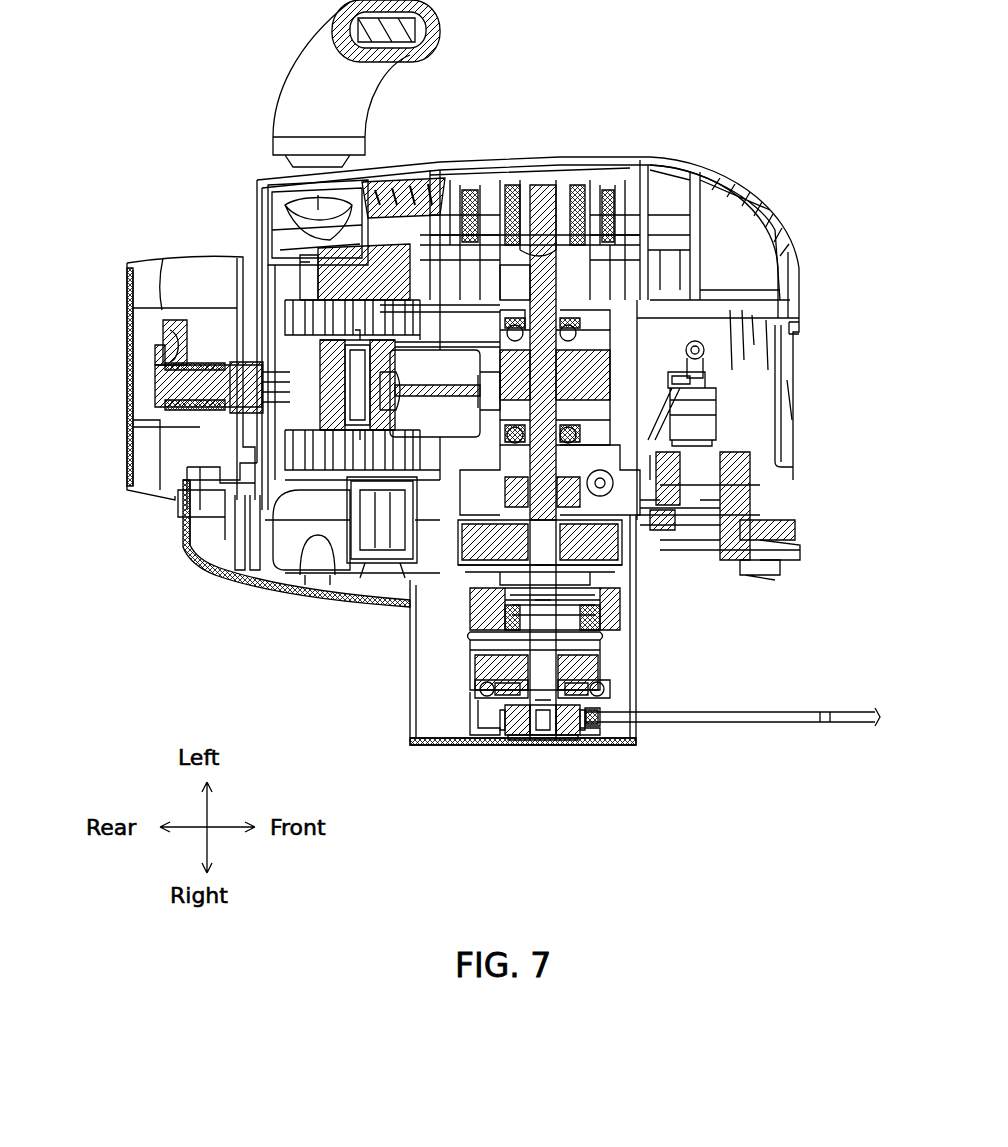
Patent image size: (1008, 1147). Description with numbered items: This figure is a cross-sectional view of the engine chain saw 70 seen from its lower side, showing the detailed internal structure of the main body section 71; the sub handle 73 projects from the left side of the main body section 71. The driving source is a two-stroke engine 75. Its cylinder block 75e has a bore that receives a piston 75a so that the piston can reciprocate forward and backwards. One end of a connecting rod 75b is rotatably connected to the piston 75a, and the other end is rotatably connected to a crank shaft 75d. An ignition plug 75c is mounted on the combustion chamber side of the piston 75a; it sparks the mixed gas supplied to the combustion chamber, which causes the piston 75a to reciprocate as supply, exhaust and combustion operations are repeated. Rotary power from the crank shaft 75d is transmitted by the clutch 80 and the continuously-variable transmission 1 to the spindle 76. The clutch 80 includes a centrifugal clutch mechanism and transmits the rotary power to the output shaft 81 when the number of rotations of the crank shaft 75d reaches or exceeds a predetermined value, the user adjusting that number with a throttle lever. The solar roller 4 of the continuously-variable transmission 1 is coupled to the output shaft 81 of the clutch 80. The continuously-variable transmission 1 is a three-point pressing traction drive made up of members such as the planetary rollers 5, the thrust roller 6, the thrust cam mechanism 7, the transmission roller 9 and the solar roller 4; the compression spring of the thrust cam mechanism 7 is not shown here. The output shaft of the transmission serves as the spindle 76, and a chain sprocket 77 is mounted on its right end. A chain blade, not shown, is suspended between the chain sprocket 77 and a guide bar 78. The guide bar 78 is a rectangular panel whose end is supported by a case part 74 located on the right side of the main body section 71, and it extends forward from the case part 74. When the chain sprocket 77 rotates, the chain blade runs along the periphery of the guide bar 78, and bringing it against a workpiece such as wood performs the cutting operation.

The continuously-variable transmission 1 is at (618, 708).
The solar roller 4 is at (490, 585).
The planetary rollers 5 is at (490, 645).
The thrust roller 6 is at (482, 690).
The thrust cam mechanism 7 is at (482, 740).
The transmission roller 9 is at (608, 616).
The engine chain saw 70 is at (636, 131).
The main body section 71 is at (670, 352).
The sub handle 73 is at (310, 72).
The case part 74 is at (636, 680).
The two-stroke engine 75 is at (508, 235).
The piston 75a is at (310, 378).
The connecting rod 75b is at (460, 375).
The ignition plug 75c is at (193, 388).
The crank shaft 75d is at (660, 448).
The cylinder block 75e is at (405, 270).
The spindle 76 is at (548, 740).
The chain sprocket 77 is at (525, 745).
The guide bar 78 is at (777, 724).
The clutch 80 is at (612, 577).
The output shaft 81 is at (420, 590).